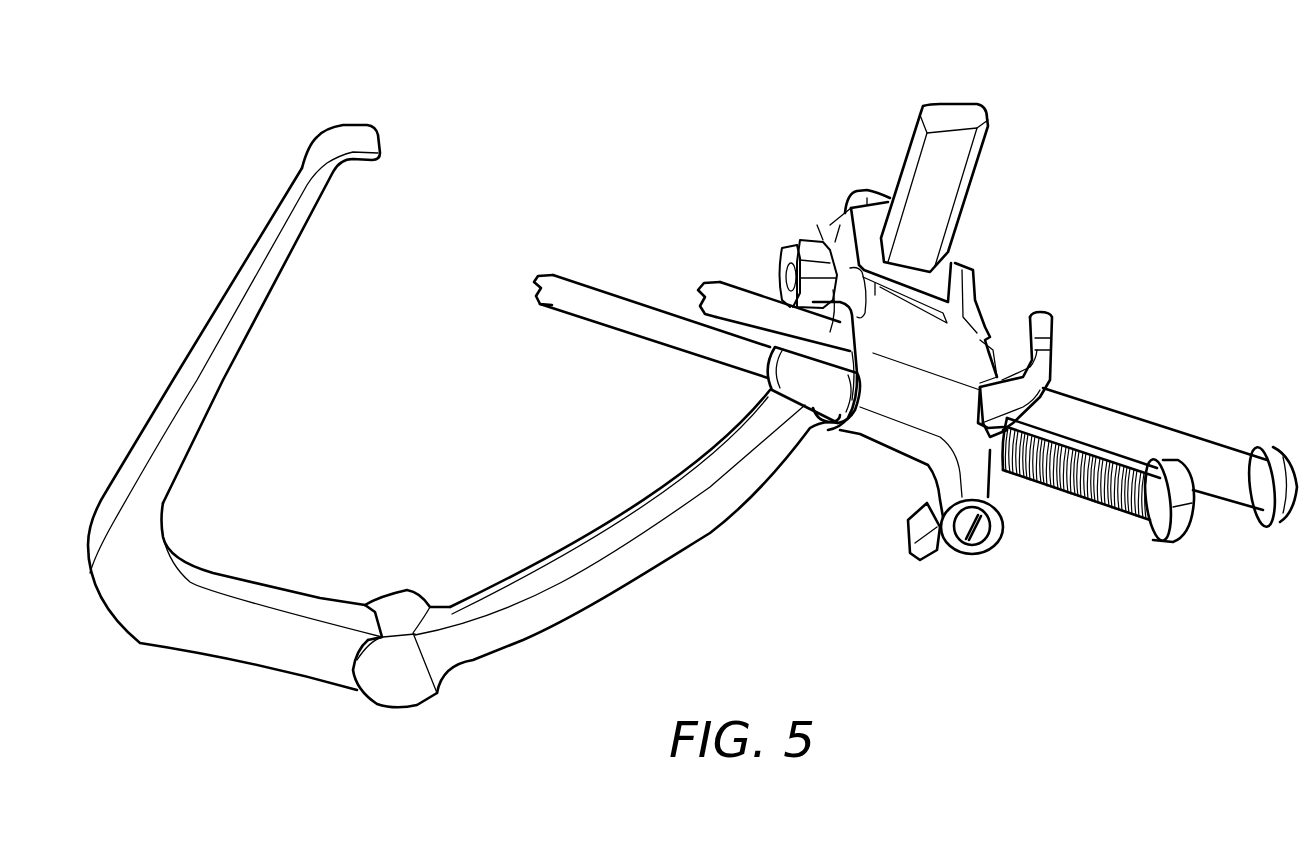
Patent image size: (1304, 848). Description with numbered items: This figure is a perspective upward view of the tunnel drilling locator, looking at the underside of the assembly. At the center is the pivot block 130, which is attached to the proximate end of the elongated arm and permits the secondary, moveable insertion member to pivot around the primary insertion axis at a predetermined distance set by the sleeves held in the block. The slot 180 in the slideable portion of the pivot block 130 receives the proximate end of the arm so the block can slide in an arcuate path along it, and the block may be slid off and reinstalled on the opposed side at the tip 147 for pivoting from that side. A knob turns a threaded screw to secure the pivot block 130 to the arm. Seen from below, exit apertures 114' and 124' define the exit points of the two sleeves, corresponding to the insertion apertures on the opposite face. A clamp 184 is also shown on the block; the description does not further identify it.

The tip 147 is at (946, 114).
The slot 180 is at (910, 258).
The clamp 184 is at (787, 250).
The pivot block 130 is at (877, 440).
The exit aperture 114' is at (725, 349).
The exit aperture 124' is at (697, 369).